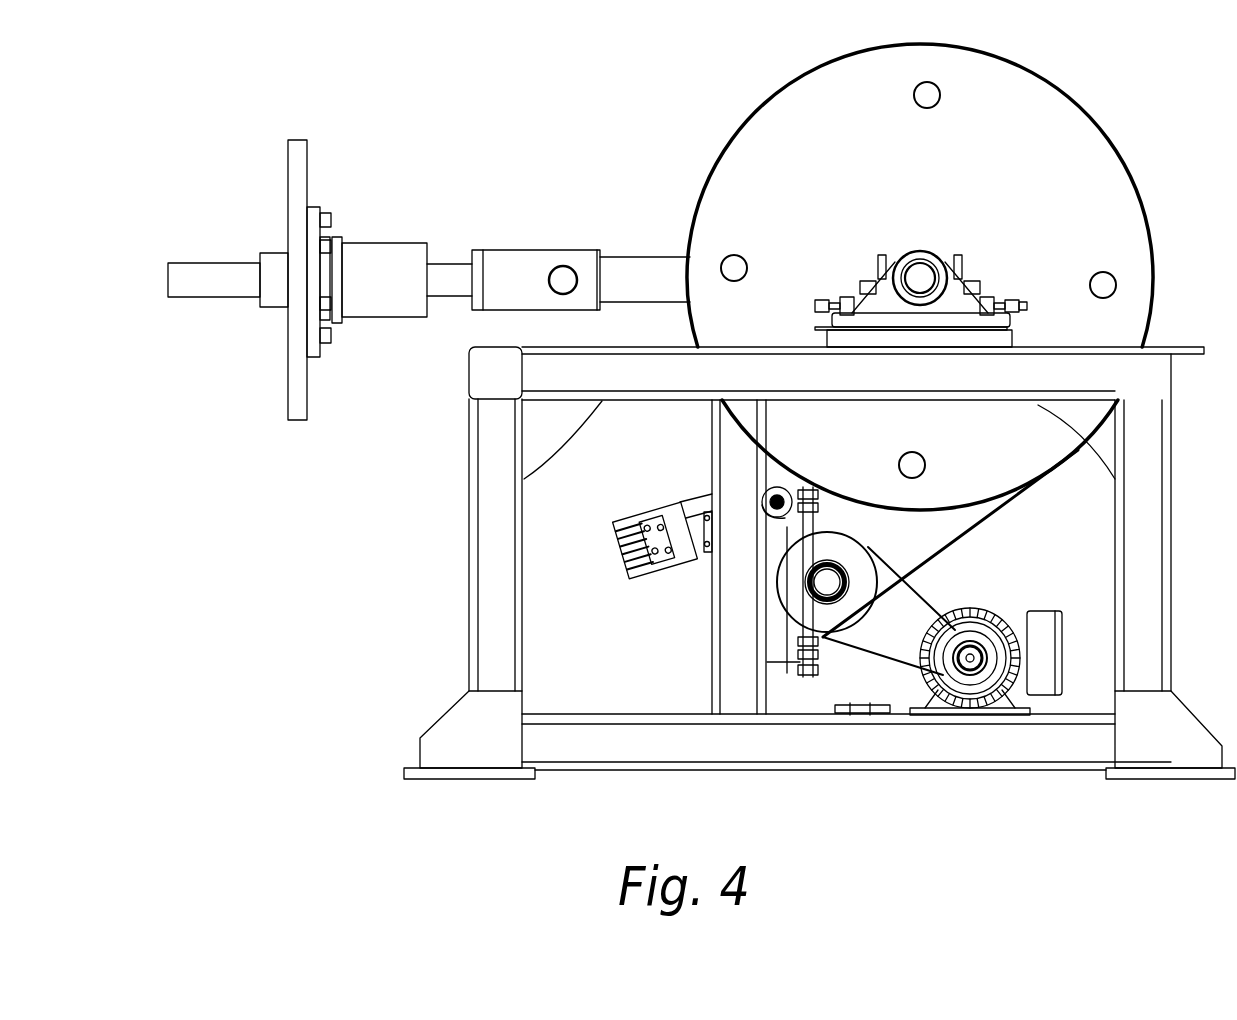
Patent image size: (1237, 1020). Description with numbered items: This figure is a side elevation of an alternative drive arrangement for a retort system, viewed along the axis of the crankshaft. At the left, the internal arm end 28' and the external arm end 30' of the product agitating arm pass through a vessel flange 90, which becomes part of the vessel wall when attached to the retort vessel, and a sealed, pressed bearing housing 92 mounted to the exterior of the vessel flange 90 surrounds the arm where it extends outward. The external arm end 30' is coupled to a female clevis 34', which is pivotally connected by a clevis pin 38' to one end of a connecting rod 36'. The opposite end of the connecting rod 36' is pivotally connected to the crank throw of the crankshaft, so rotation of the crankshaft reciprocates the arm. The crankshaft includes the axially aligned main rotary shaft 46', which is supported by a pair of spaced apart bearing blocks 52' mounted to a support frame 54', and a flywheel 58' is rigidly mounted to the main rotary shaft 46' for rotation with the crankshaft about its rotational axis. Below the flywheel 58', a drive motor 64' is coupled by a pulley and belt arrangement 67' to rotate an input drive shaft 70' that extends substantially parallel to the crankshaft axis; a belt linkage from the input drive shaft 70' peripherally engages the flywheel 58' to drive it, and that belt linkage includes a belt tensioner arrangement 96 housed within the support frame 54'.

The internal arm end 28' is at (210, 259).
The vessel flange 90 is at (296, 378).
The sealed, pressed bearing housing 92 is at (378, 258).
The external arm end 30' is at (427, 319).
The female clevis 34' is at (528, 255).
The clevis pin 38' is at (575, 240).
The connecting rod 36' is at (645, 246).
The flywheel 58' is at (926, 277).
The bearing blocks 52' is at (920, 277).
The main rotary shaft 46' is at (963, 256).
The support frame 54' is at (803, 563).
The belt tensioner arrangement 96 is at (699, 490).
The input drive shaft 70' is at (746, 595).
The drive motor 64' is at (957, 629).
The pulley and belt arrangement 67' is at (891, 636).